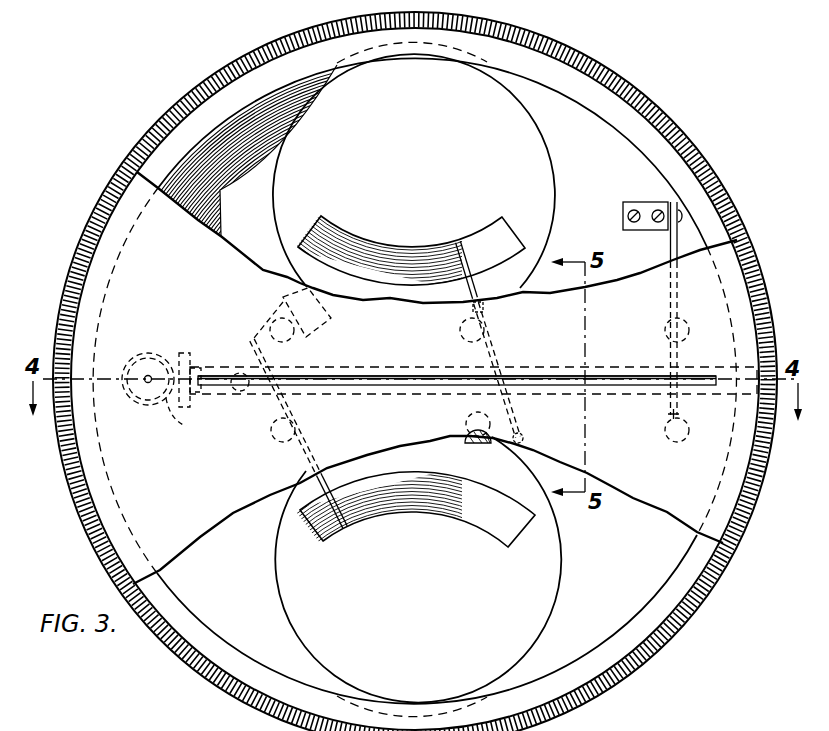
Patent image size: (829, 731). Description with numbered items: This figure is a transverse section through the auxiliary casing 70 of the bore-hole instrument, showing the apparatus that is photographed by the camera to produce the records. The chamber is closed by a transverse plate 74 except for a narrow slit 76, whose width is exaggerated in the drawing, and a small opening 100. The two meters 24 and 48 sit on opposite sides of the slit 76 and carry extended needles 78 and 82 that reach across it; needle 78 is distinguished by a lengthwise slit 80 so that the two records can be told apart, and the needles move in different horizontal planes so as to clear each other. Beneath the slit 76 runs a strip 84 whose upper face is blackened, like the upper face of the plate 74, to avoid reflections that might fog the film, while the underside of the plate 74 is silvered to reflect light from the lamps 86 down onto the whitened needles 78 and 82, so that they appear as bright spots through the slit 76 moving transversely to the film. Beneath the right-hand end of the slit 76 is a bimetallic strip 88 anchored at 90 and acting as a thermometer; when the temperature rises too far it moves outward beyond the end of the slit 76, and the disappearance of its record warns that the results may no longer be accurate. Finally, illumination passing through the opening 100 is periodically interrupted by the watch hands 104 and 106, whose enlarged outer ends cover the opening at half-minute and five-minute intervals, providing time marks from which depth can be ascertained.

The meter 24 is at (391, 179).
The meter 48 is at (391, 607).
The auxiliary casing 70 is at (753, 515).
The transverse plate 74 is at (678, 508).
The slit 76 is at (398, 392).
The needle 78 is at (500, 351).
The lengthwise slit 80 is at (503, 379).
The needle 82 is at (302, 453).
The strip 84 is at (369, 371).
The lamps 86 is at (270, 330).
The bimetallic strip 88 is at (668, 353).
The anchor 90 is at (645, 205).
The small opening 100 is at (148, 375).
The watch hand 104 is at (175, 417).
The watch hand 106 is at (283, 303).